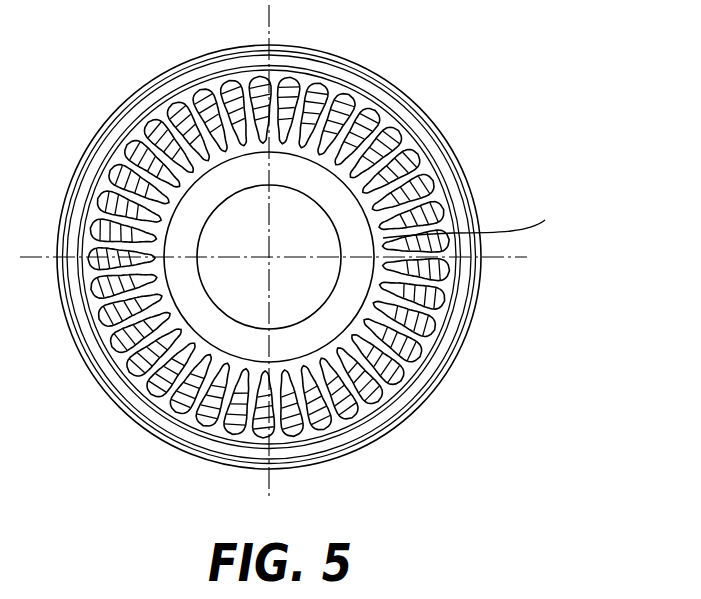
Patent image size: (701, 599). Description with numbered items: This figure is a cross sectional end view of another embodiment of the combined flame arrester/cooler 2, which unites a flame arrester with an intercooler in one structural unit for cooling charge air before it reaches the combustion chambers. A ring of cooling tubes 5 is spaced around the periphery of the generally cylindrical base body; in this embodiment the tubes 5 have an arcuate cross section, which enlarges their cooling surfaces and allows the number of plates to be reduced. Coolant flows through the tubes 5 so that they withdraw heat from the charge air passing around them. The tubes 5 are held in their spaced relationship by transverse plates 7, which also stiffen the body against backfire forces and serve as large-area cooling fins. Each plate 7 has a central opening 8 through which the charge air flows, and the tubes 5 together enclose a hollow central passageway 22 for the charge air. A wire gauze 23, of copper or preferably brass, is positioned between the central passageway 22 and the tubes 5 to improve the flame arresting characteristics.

The flame arrester/cooler 2 is at (63, 393).
The tubes 5 is at (297, 80).
The plates 7 is at (336, 203).
The central opening 8 is at (310, 300).
The central passageway 22 is at (236, 283).
The wire gauze 23 is at (482, 218).